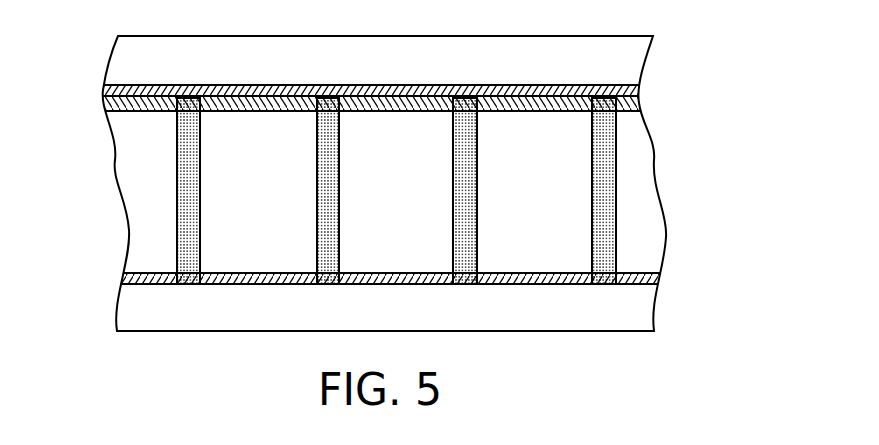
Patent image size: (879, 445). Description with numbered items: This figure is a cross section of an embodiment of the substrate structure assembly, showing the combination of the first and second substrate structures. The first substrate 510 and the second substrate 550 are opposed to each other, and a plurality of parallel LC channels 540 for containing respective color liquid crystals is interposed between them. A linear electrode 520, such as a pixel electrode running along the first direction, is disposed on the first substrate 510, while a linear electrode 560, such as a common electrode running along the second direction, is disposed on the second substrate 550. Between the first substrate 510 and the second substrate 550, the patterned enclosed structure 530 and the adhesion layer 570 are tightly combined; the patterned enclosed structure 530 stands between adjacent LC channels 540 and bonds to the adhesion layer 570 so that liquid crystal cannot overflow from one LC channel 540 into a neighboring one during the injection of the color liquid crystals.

The first substrate 510 is at (625, 310).
The linear electrode 520 is at (642, 276).
The patterned enclosed structure 530 is at (616, 161).
The LC channel 540 is at (562, 202).
The second substrate 550 is at (625, 62).
The linear electrode 560 is at (630, 88).
The adhesion layer 570 is at (638, 106).